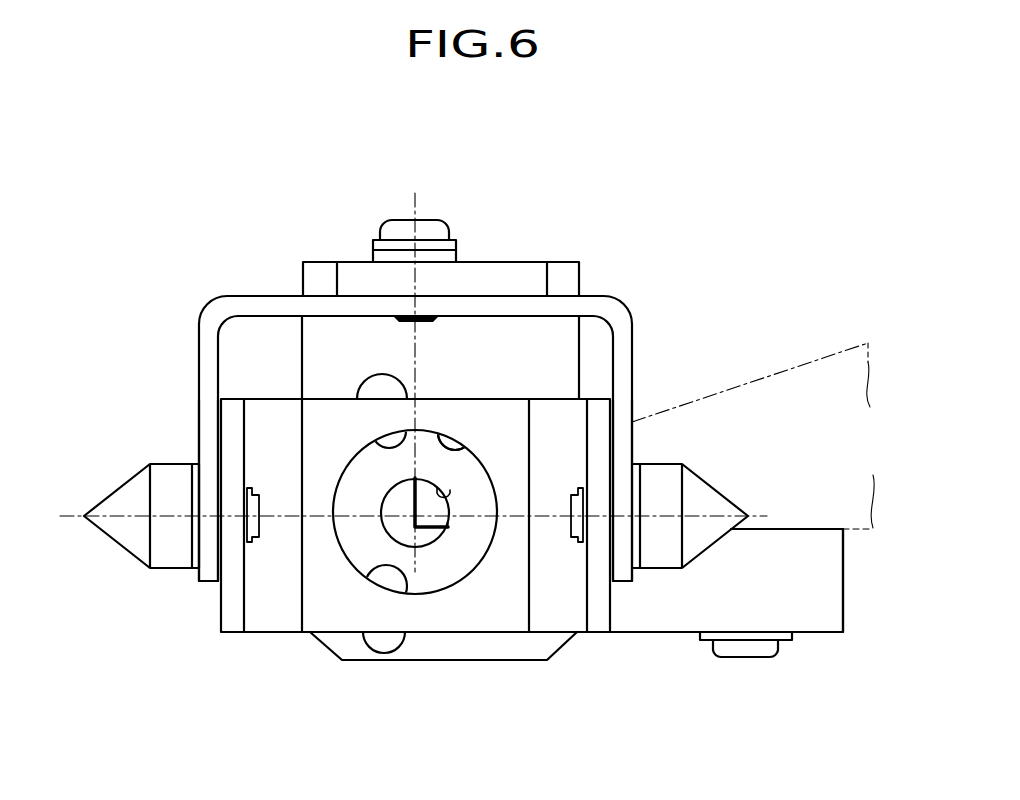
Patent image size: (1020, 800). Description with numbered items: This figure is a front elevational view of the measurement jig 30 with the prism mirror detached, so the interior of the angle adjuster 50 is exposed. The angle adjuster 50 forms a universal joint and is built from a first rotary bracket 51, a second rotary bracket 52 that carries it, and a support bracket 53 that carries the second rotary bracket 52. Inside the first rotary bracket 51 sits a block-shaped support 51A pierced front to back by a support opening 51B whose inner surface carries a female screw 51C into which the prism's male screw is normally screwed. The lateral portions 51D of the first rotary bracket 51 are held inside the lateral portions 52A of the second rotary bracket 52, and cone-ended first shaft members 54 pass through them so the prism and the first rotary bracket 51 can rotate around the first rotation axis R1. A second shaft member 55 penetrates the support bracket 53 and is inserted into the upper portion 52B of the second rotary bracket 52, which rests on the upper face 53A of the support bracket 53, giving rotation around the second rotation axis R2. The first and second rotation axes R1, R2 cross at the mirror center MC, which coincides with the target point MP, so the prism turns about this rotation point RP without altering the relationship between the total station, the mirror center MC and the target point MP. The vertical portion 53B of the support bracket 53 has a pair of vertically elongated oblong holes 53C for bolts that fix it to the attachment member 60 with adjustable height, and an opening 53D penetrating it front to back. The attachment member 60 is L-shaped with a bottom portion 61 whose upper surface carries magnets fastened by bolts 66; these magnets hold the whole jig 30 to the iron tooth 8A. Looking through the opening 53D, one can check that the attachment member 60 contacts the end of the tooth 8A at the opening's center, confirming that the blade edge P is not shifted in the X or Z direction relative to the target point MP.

The measurement jig 30 is at (527, 168).
The angle adjuster 50 is at (632, 297).
The first rotary bracket 51 is at (551, 398).
The support 51A is at (482, 415).
The support opening 51B is at (455, 440).
The female screw 51C is at (455, 433).
The lateral portions 51D is at (230, 433).
The second rotary bracket 52 is at (510, 300).
The lateral portions 52A is at (203, 382).
The upper portion 52B is at (533, 305).
The support bracket 53 is at (325, 275).
The upper face 53A is at (477, 273).
The vertical portion 53B is at (315, 363).
The oblong holes 53C is at (380, 380).
The opening 53D is at (447, 497).
The first shaft members 54 is at (120, 503).
The second shaft member 55 is at (432, 230).
The attachment member 60 is at (792, 538).
The bottom portion 61 is at (826, 575).
The bolts 66 is at (747, 650).
The teeth 8A is at (808, 387).
The first rotation axis R1 is at (755, 507).
The second rotation axis R2 is at (412, 205).
The blade edge P is at (415, 515).
The mirror center MC is at (415, 515).
The target point MP is at (415, 515).
The rotation point RP is at (415, 515).